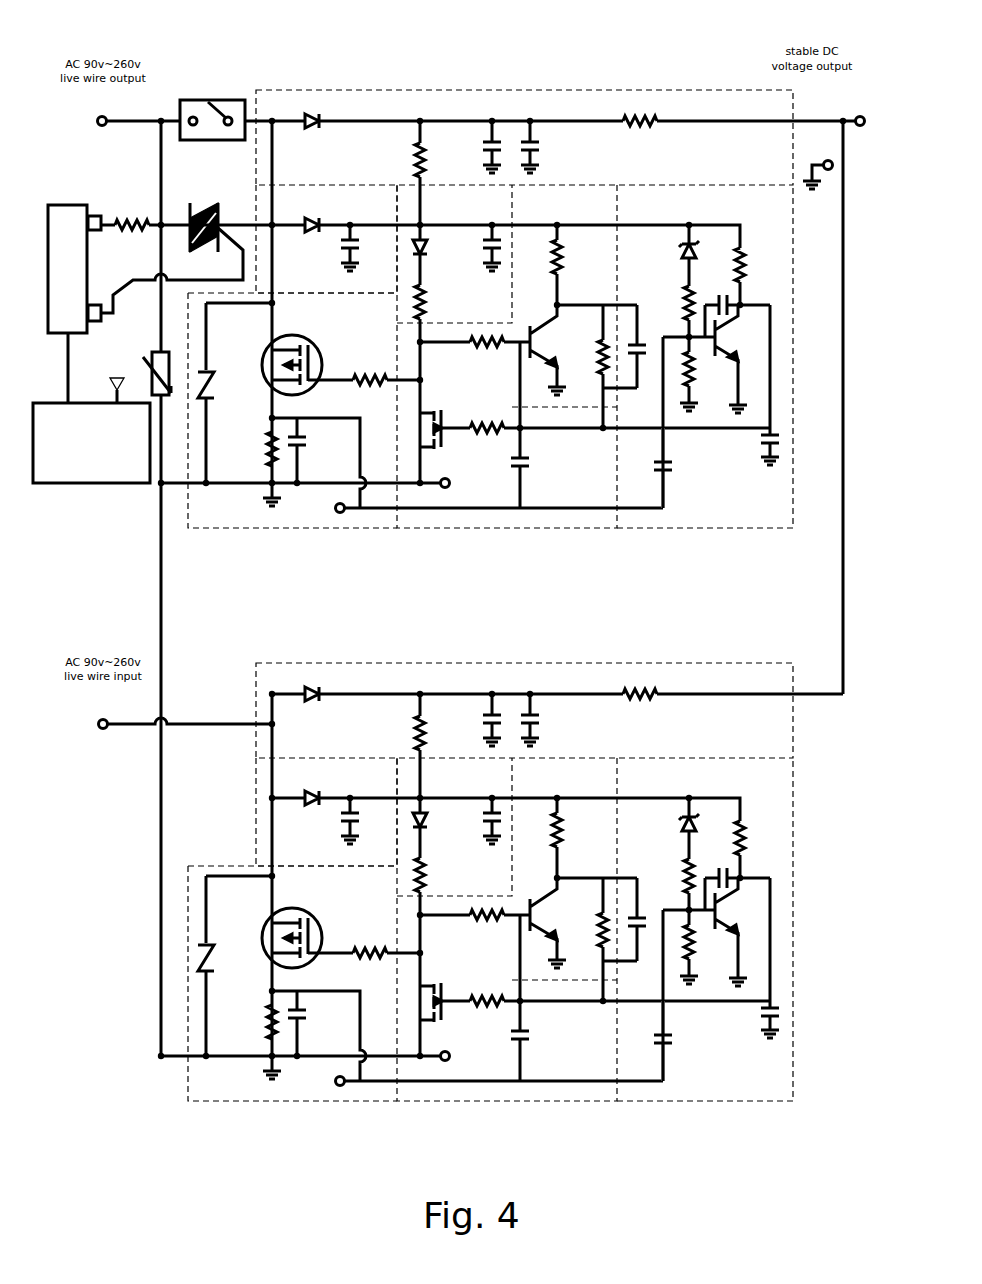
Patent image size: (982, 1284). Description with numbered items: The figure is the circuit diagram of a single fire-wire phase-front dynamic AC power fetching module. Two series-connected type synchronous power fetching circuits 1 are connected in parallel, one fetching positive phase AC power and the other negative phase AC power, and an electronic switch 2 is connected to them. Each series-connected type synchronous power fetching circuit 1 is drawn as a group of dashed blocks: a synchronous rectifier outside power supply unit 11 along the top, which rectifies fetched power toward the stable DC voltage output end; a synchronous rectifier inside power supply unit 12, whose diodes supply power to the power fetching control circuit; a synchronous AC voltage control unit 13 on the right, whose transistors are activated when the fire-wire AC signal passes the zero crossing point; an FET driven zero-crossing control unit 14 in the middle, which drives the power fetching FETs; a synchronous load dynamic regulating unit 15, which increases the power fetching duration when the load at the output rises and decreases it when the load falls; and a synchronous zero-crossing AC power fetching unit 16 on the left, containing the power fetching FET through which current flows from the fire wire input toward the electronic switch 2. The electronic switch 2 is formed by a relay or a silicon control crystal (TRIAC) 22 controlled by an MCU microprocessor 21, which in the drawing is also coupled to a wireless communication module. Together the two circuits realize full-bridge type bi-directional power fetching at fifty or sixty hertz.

The series-connected type synchronous power fetching circuit 1 is at (577, 80).
The synchronous rectifier outside power supply unit 11 is at (688, 88).
The synchronous rectifier inside power supply unit 12 is at (256, 190).
The synchronous AC voltage control unit 13 is at (751, 530).
The FET driven zero-crossing control unit 14 is at (503, 530).
The synchronous load dynamic regulating unit 15 is at (612, 410).
The synchronous zero-crossing AC power fetching unit 16 is at (300, 530).
The electronic switch 2 is at (147, 168).
The MCU 21 is at (68, 212).
The silicon control crystal (TRIAC) 22 is at (190, 210).